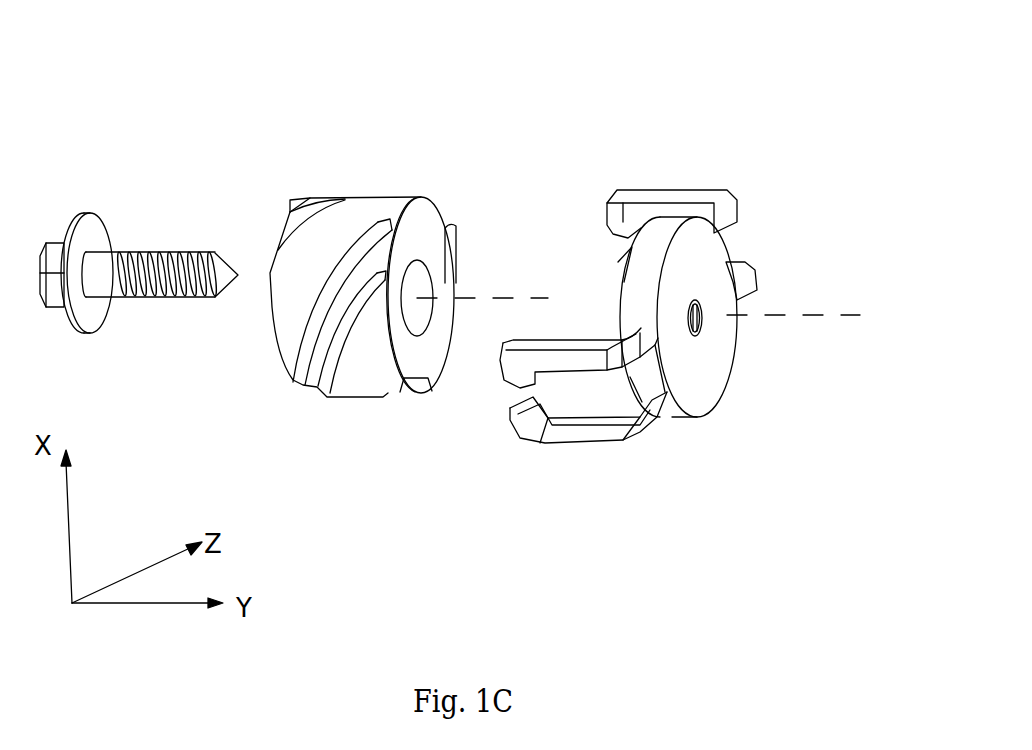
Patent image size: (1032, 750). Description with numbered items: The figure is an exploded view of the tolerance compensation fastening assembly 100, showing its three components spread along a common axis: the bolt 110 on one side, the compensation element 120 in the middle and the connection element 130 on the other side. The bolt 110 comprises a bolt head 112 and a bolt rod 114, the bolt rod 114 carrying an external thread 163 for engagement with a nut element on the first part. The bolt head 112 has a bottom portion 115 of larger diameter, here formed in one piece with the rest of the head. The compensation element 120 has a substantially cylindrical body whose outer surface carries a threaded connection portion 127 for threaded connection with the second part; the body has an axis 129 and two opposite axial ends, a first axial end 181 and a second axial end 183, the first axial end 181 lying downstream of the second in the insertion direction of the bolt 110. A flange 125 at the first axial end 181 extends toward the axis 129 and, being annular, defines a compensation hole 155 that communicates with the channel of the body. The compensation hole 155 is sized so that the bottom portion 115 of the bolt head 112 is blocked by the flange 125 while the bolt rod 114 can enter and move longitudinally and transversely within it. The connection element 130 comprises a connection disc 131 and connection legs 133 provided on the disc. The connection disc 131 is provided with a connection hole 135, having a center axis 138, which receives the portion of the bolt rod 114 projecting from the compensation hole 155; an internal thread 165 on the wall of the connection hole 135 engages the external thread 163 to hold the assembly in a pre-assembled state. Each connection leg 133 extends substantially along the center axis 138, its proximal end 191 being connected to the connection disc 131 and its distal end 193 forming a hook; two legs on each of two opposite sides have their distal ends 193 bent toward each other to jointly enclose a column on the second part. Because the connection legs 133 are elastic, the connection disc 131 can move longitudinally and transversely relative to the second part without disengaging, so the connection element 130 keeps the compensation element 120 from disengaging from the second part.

The tolerance compensation fastening assembly 100 is at (788, 100).
The bolt 110 is at (157, 257).
The bolt head 112 is at (53, 249).
The bolt rod 114 is at (118, 256).
The bottom portion 115 is at (95, 318).
The external thread 163 is at (158, 252).
The compensation element 120 is at (392, 291).
The flange 125 is at (447, 314).
The threaded connection portion 127 is at (340, 198).
The axis 129 is at (543, 298).
The compensation hole 155 is at (420, 283).
The first axial end 181 is at (387, 388).
The second axial end 183 is at (273, 340).
The connection element 130 is at (707, 332).
The connection disc 131 is at (707, 395).
The connection legs 133 is at (653, 192).
The connection hole 135 is at (724, 306).
The center axis 138 is at (843, 313).
The internal thread 165 is at (706, 328).
The proximal end 191 is at (657, 412).
The distal end 193 is at (533, 420).